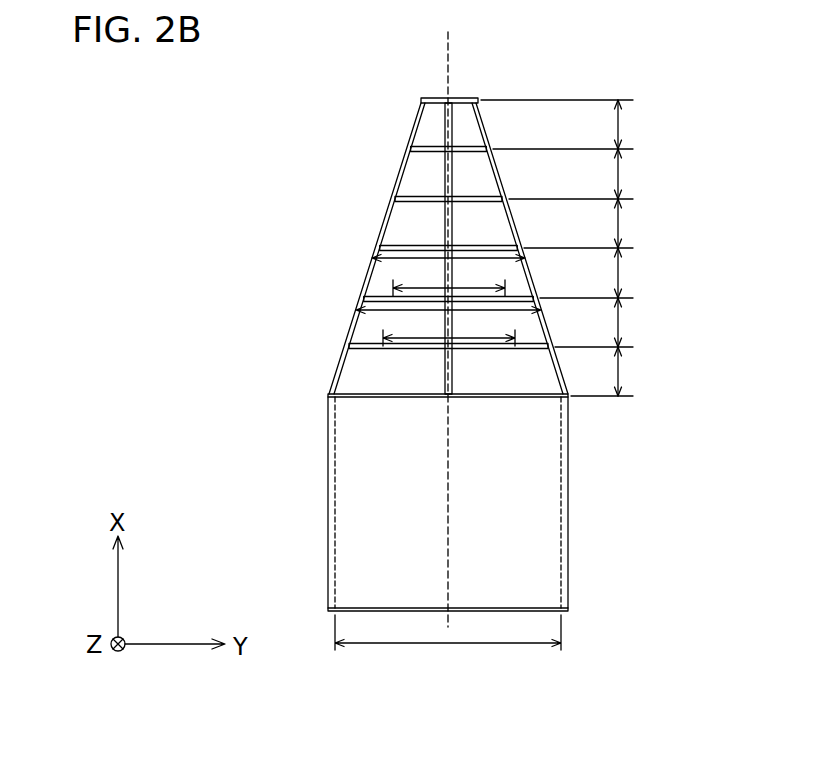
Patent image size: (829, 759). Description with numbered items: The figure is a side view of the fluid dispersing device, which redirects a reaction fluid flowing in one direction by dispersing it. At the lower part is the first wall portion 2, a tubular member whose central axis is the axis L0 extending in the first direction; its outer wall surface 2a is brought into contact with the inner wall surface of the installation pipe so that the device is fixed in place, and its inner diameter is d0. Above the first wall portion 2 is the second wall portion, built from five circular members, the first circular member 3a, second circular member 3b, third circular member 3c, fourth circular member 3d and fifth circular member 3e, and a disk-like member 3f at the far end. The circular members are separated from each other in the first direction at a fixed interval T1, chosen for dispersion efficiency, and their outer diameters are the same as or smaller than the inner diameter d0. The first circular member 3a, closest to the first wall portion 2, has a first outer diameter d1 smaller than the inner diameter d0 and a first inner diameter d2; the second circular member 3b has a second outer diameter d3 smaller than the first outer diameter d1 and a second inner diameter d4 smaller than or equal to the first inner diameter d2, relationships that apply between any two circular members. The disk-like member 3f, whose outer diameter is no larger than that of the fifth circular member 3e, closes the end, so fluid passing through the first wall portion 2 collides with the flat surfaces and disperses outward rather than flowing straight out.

The first wall portion 2 is at (567, 494).
The outer wall surface 2a is at (568, 556).
The first circular member 3a is at (373, 352).
The second circular member 3b is at (362, 292).
The third circular member 3c is at (376, 246).
The fourth circular member 3d is at (393, 196).
The fifth circular member 3e is at (408, 146).
The disk-like member 3f is at (422, 98).
The axis L0 is at (450, 54).
The inner diameter of the first wall portion d0 is at (448, 644).
The first outer diameter d1 is at (355, 308).
The first inner diameter d2 is at (449, 329).
The second outer diameter d3 is at (370, 255).
The second inner diameter d4 is at (449, 278).
The fixed interval T1 is at (569, 248).